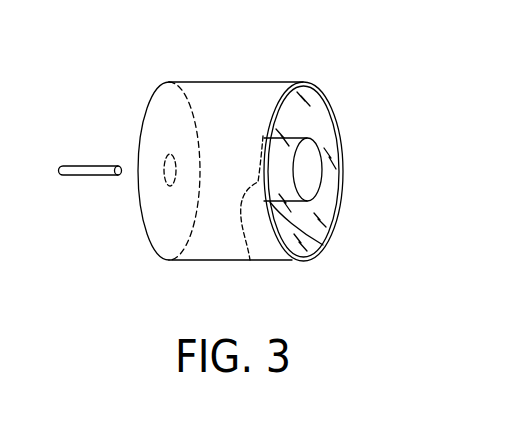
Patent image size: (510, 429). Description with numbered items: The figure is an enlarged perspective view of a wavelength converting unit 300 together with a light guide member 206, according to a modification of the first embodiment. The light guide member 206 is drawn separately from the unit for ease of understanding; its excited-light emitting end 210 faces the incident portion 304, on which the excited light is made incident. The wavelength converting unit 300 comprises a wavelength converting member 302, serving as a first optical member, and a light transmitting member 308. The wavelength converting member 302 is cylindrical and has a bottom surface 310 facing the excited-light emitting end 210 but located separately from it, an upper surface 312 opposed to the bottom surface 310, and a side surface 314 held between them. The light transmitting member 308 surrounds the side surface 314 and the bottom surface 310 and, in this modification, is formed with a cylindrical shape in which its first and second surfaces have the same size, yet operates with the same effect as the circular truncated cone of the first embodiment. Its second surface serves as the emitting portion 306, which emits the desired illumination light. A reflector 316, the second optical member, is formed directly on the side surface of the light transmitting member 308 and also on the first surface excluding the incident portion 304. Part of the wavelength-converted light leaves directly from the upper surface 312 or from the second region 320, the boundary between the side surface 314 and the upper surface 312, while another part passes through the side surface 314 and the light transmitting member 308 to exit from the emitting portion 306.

The wavelength converting unit 300 is at (269, 65).
The wavelength converting member 302 is at (323, 205).
The incident portion 304 is at (163, 163).
The emitting portion 306 is at (322, 118).
The light transmitting member 308 is at (213, 93).
The bottom surface 310 is at (250, 260).
The upper surface 312 is at (315, 173).
The side surface 314 is at (323, 245).
The reflector 316 is at (326, 98).
The second region 320 is at (322, 152).
The light guide member 206 is at (77, 177).
The excited-light emitting end 210 is at (125, 179).